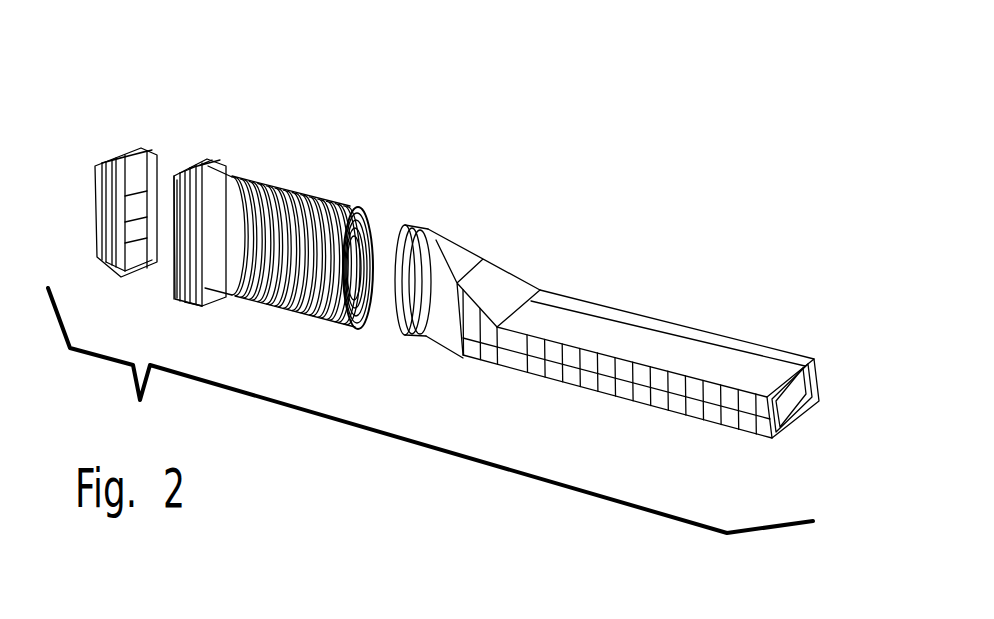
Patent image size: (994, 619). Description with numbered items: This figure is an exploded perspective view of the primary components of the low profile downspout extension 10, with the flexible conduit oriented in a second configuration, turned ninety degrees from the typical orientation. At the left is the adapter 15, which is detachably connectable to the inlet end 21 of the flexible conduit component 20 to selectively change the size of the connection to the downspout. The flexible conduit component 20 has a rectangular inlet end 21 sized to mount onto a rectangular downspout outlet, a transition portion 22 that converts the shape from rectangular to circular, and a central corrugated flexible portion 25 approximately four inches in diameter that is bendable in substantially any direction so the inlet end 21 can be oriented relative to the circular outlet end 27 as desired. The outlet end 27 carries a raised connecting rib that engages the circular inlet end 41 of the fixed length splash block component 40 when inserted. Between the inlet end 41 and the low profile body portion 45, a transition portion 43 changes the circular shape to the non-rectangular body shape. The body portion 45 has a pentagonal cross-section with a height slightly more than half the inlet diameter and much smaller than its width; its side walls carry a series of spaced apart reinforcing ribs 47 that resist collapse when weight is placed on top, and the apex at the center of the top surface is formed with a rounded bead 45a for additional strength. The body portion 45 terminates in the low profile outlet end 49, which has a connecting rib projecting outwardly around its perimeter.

The low profile downspout extension 10 is at (755, 36).
The adapter 15 is at (126, 152).
The flexible conduit component 20 is at (212, 78).
The inlet end 21 is at (178, 284).
The transition portion 22 is at (219, 162).
The corrugated flexible portion 25 is at (288, 318).
The outlet end 27 is at (357, 338).
The splash block component 40 is at (572, 297).
The inlet end 41 is at (412, 229).
The transition portion 43 is at (470, 263).
The body portion 45 is at (659, 323).
The rounded bead 45a is at (713, 351).
The reinforcing ribs 47 is at (466, 346).
The outlet end 49 is at (801, 421).